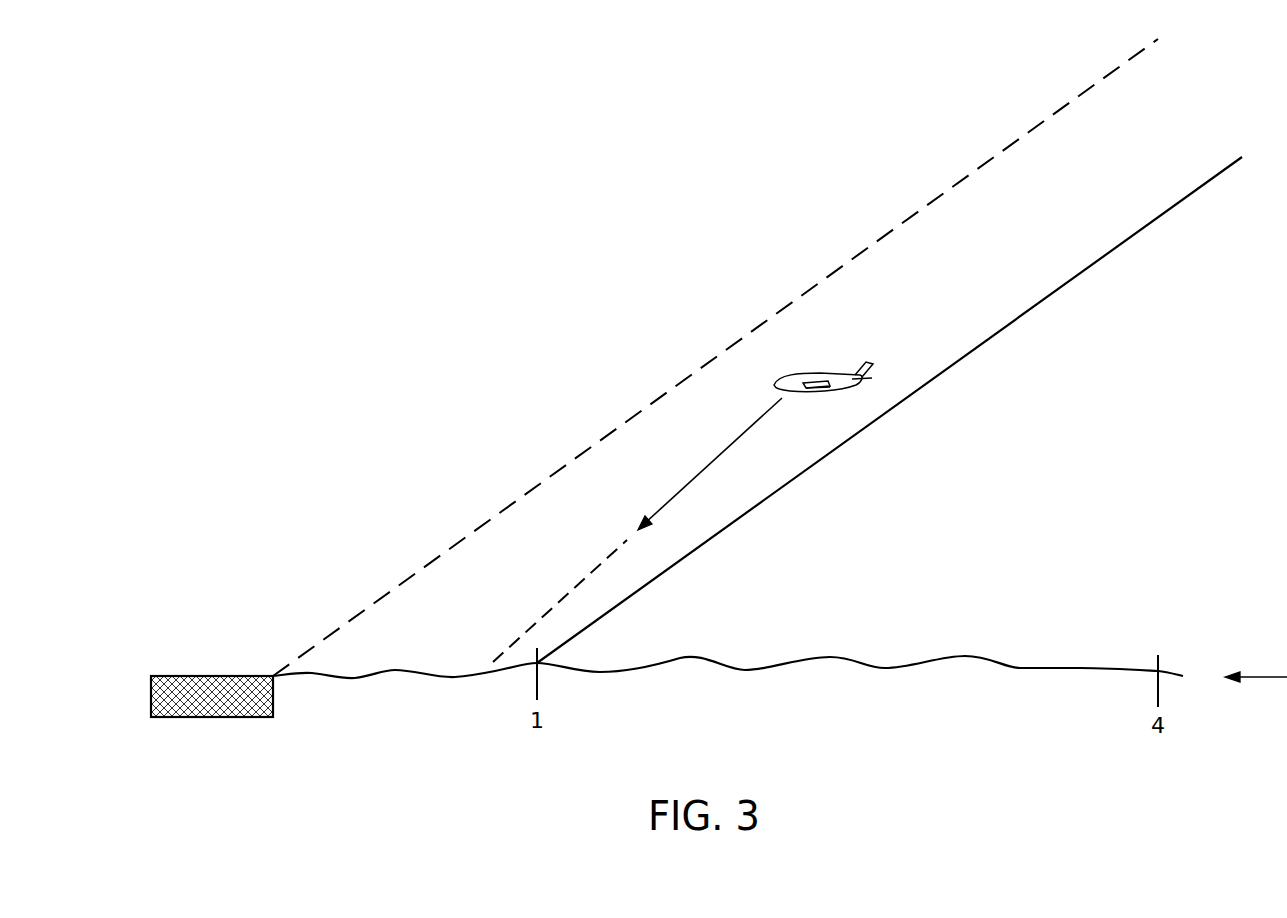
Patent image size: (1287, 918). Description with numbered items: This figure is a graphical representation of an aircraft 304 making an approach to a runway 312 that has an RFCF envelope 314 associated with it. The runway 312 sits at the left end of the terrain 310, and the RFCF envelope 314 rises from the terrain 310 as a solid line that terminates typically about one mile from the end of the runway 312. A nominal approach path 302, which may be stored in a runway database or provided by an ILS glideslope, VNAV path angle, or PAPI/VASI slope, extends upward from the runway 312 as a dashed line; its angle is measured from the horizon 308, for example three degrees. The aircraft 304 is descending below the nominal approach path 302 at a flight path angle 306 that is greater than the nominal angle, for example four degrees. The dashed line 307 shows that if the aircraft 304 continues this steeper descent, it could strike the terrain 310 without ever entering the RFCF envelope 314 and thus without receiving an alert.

The nominal approach path 302 is at (1018, 141).
The aircraft 304 is at (818, 373).
The flight path angle 306 is at (703, 466).
The dashed line 307 is at (571, 591).
The horizon 308 is at (1262, 676).
The terrain 310 is at (437, 675).
The runway 312 is at (197, 676).
The RFCF envelope 314 is at (1023, 339).